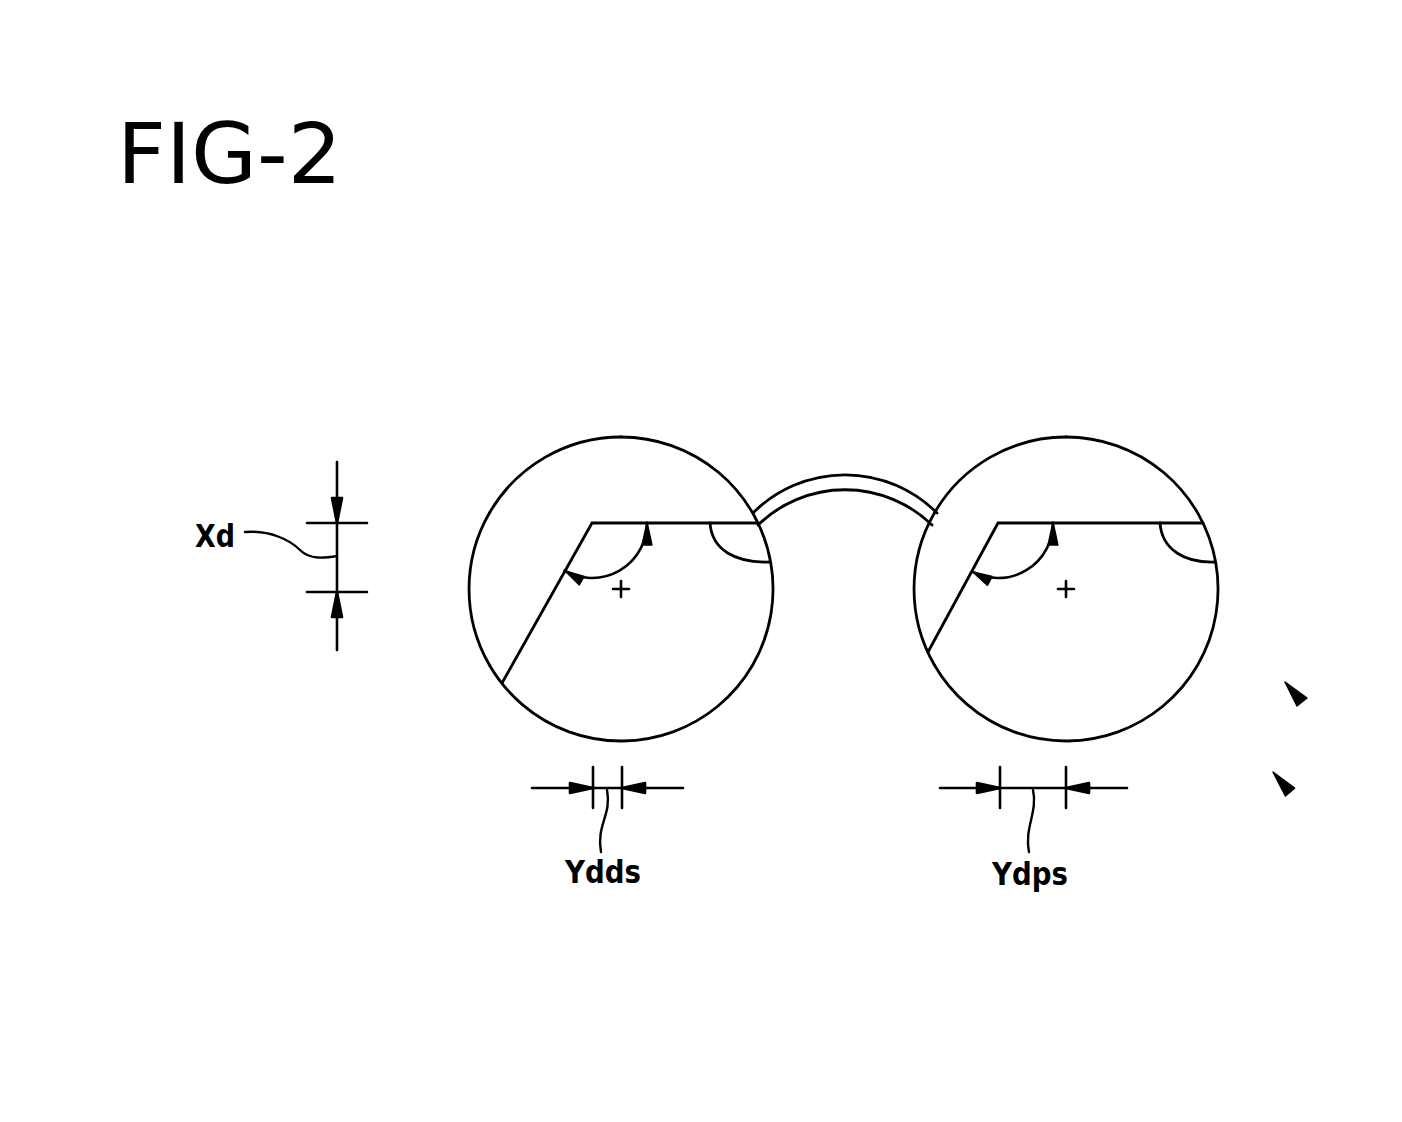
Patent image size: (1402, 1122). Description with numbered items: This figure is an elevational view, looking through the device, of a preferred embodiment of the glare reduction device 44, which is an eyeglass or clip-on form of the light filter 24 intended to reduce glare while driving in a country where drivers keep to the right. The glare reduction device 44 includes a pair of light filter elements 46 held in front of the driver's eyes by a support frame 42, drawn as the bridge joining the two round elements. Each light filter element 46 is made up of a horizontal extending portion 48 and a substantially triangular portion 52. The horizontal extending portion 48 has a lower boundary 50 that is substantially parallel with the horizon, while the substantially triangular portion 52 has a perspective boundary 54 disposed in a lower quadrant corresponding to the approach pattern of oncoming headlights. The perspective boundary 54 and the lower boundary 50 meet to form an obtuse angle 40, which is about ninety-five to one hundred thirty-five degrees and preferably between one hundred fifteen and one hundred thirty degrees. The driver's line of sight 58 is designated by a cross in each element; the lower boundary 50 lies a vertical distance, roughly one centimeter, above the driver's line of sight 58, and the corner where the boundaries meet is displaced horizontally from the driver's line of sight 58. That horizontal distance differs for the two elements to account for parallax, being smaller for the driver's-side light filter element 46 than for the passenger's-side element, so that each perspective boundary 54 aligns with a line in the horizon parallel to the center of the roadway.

The light filter 24 is at (1302, 702).
The obtuse angle 40 is at (600, 580).
The support frame 42 is at (842, 483).
The glare reduction device 44 is at (1290, 792).
The light filter element 46 is at (683, 461).
The horizontal extending portion 48 is at (582, 477).
The lower boundary 50 is at (770, 562).
The substantially triangular portion 52 is at (490, 587).
The perspective boundary 54 is at (518, 657).
The driver's line of sight 58 is at (628, 591).